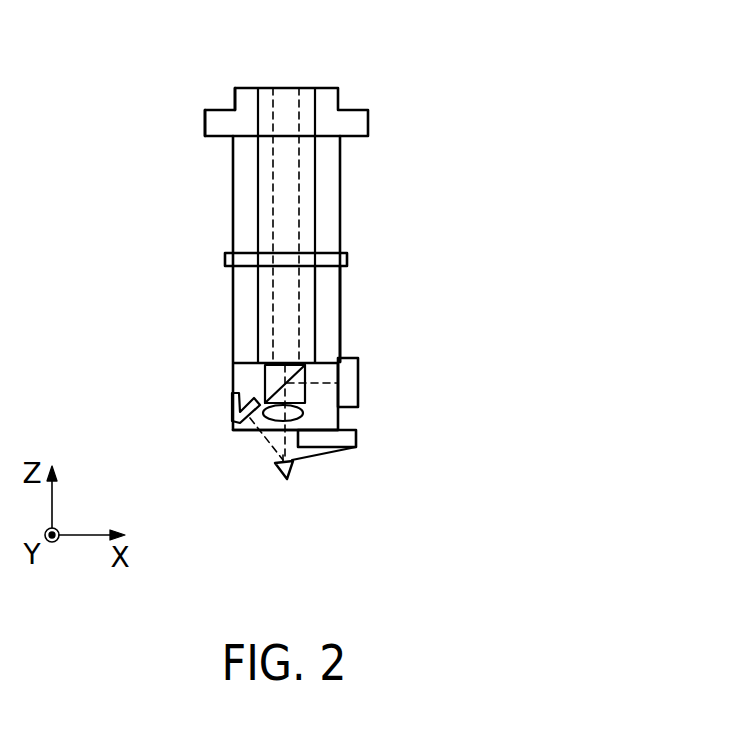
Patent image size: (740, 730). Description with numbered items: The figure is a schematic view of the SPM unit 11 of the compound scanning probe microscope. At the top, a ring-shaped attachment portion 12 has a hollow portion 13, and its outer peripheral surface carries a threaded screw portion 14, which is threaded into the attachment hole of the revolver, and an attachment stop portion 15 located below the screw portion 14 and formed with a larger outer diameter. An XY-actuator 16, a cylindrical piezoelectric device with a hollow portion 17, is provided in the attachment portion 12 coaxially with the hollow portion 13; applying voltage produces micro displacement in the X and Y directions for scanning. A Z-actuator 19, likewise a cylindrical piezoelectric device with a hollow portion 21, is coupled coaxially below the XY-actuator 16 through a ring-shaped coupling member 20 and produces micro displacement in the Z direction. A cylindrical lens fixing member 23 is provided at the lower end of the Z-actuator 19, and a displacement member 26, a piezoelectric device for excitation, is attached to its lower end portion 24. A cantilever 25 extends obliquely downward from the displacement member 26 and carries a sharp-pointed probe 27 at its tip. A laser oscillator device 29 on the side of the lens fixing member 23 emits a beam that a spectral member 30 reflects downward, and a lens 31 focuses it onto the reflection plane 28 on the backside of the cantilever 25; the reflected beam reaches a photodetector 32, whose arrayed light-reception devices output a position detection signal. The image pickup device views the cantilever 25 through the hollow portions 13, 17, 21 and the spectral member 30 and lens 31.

The SPM unit 11 is at (395, 96).
The attachment portion 12 is at (347, 110).
The hollow portion 13 is at (282, 95).
The screw portion 14 is at (235, 93).
The attachment stop portion 15 is at (205, 118).
The XY-actuator 16 is at (340, 187).
The hollow portion 17 is at (287, 158).
The Z-actuator 19 is at (333, 298).
The coupling member 20 is at (348, 260).
The hollow portion 21 is at (287, 337).
The lens fixing member 23 is at (233, 372).
The lower end portion 24 is at (317, 418).
The cantilever 25 is at (328, 455).
The displacement member 26 is at (358, 438).
The probe 27 is at (288, 473).
The reflection plane 28 is at (270, 465).
The laser oscillator device 29 is at (358, 373).
The spectral member 30 is at (272, 380).
The lens 31 is at (268, 430).
The photodetector 32 is at (233, 410).